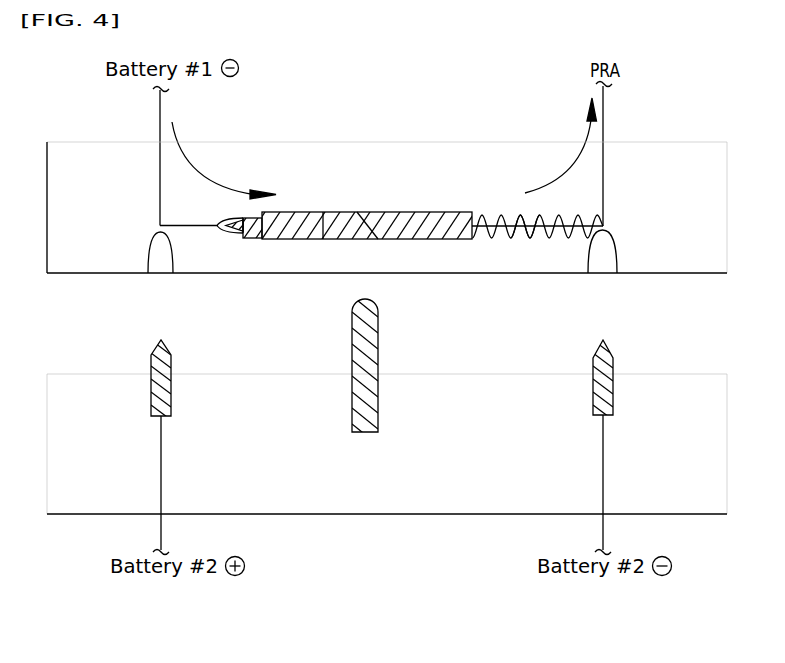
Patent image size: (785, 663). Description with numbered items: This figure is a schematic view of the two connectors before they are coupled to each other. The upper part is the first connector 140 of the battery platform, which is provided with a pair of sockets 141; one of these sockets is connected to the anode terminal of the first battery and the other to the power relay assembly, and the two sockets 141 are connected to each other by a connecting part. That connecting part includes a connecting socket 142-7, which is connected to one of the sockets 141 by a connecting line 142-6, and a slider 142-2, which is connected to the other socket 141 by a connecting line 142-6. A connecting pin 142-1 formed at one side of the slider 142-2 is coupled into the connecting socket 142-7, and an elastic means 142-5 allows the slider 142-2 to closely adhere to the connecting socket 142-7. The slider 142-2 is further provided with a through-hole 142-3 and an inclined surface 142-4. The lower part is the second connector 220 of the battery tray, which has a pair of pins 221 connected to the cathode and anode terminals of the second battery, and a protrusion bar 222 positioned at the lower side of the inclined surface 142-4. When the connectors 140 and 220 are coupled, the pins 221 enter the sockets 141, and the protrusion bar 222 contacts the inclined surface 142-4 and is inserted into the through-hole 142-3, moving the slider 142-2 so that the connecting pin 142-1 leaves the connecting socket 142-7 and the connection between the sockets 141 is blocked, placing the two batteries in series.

The first connector 140 is at (680, 142).
The sockets 141 is at (173, 257).
The connecting pin 142-1 is at (246, 216).
The slider 142-2 is at (428, 213).
The through-hole 142-3 is at (331, 222).
The inclined surface 142-4 is at (362, 240).
The elastic means 142-5 is at (507, 214).
The connecting line 142-6 is at (530, 236).
The connecting socket 142-7 is at (232, 216).
The second connector 220 is at (384, 514).
The pins 221 is at (158, 344).
The protrusion bar 222 is at (378, 337).